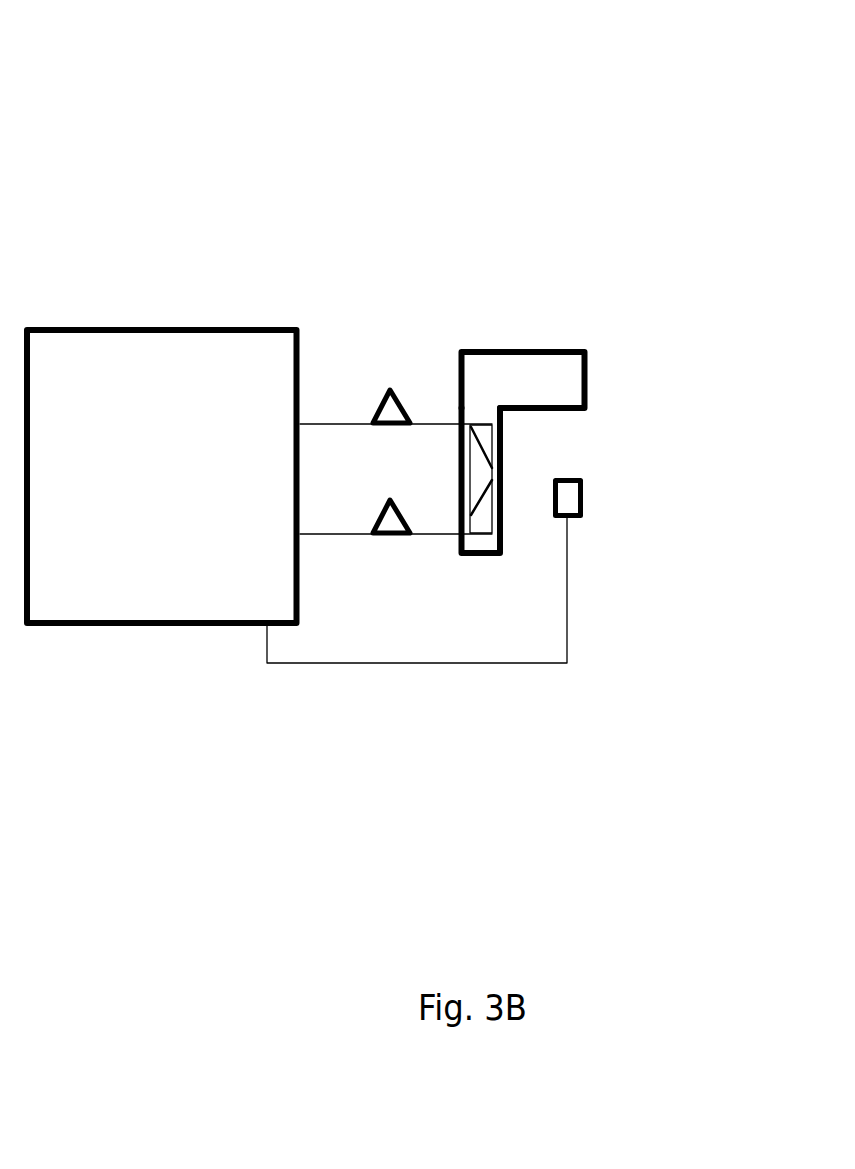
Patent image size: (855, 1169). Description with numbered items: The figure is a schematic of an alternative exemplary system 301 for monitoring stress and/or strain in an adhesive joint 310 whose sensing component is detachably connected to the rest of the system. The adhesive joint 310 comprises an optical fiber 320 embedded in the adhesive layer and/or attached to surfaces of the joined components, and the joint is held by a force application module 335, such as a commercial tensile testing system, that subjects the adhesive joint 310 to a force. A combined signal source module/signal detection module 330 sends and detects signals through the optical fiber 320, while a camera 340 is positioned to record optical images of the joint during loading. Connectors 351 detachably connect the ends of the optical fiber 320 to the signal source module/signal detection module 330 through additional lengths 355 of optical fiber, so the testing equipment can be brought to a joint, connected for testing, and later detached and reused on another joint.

The system 301 is at (205, 110).
The adhesive joint 310 is at (514, 459).
The optical fiber 320 is at (432, 412).
The signal source module/signal detection module 330 is at (225, 640).
The force application module 335 is at (533, 330).
The camera 340 is at (592, 527).
The connectors 351 is at (404, 425).
The additional lengths of optical fiber 355 is at (334, 437).